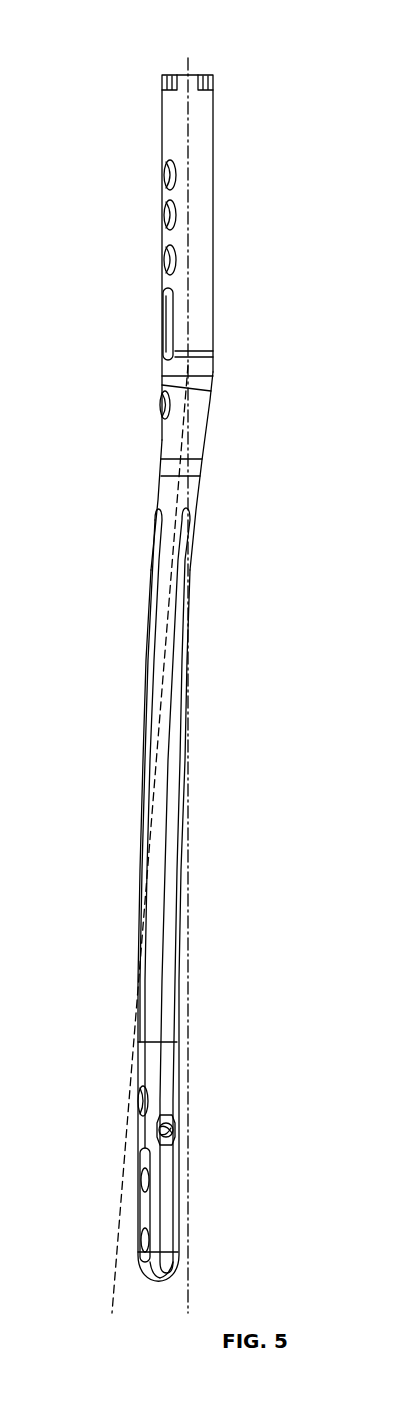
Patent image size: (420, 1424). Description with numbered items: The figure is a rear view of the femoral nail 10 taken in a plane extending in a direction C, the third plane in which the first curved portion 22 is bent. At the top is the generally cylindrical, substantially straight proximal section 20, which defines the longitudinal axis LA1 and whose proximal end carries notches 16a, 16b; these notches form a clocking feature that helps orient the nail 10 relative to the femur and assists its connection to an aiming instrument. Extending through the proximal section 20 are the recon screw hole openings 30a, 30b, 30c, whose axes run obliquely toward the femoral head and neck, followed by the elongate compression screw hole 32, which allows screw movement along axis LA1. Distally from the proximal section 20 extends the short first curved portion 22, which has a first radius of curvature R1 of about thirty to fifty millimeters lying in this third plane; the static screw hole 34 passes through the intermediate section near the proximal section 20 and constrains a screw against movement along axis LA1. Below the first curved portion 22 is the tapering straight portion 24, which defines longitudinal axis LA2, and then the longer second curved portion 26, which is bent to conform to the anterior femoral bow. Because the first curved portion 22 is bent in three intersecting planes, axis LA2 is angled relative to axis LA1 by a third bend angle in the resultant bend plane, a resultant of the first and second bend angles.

The femoral nail 10 is at (152, 30).
The notch 16a is at (213, 80).
The notch 16b is at (163, 80).
The proximal section 20 is at (213, 215).
The first curved portion 22 is at (213, 370).
The straight portion 24 is at (208, 430).
The second curved portion 26 is at (143, 830).
The opening 30a is at (165, 175).
The opening 30b is at (165, 215).
The opening 30c is at (164, 260).
The compression screw hole 32 is at (165, 326).
The static screw hole 34 is at (162, 405).
The first radius of curvature R1 is at (180, 365).
The direction C is at (100, 957).
The longitudinal axis LA1 is at (188, 1238).
The longitudinal axis LA2 is at (117, 1238).